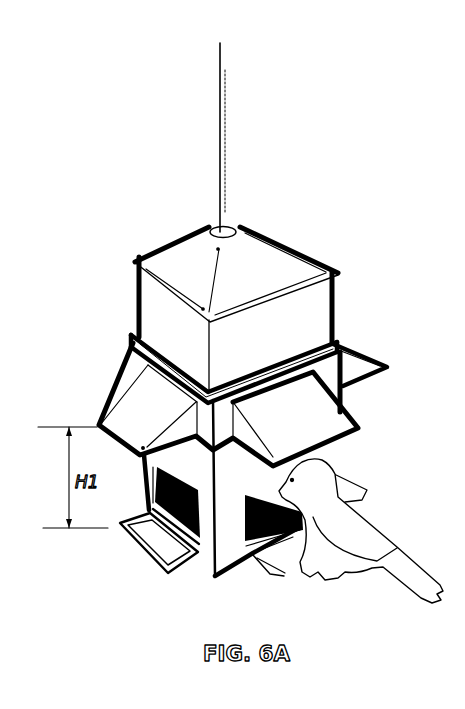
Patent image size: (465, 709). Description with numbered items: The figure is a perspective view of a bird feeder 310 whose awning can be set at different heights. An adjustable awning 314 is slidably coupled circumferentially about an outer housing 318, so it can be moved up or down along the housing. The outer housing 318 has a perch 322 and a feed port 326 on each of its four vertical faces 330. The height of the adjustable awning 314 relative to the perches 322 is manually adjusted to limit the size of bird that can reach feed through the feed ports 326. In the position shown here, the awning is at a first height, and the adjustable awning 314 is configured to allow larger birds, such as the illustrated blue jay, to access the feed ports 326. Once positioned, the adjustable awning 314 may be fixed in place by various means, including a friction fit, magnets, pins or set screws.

The feeder 310 is at (249, 335).
The adjustable awning 314 is at (355, 340).
The outer housing 318 is at (295, 312).
The perch 322 is at (140, 545).
The feed port 326 is at (198, 512).
The vertical face 330 is at (157, 327).